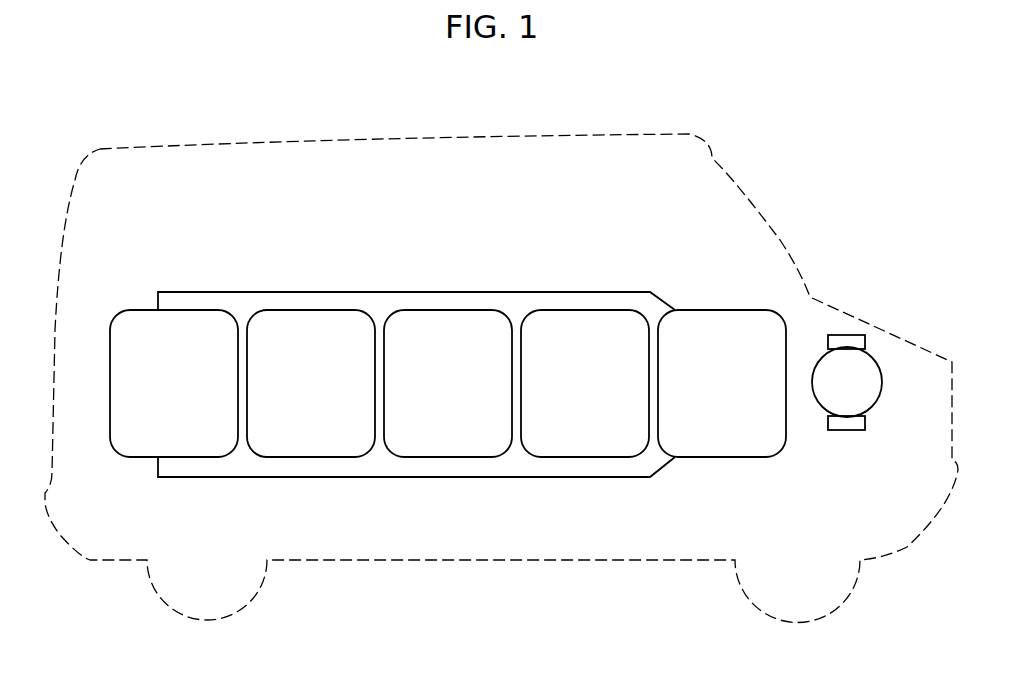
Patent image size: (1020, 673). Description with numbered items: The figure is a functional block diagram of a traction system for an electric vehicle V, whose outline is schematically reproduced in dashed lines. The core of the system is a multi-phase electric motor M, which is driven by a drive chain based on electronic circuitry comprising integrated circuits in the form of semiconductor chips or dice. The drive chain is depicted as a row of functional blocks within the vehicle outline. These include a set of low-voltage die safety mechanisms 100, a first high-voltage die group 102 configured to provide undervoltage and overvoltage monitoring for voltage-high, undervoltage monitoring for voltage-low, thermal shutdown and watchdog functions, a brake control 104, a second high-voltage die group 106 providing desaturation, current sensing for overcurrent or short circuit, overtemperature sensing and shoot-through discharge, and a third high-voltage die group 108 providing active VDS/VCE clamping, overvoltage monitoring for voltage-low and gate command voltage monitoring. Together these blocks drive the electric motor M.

The electric vehicle V is at (703, 166).
The set of low-voltage die safety mechanisms 100 is at (137, 322).
The first high-voltage die group 102 is at (317, 340).
The brake control 104 is at (442, 335).
The second high-voltage die group 106 is at (578, 325).
The third high-voltage die group 108 is at (717, 332).
The electric motor M is at (862, 393).